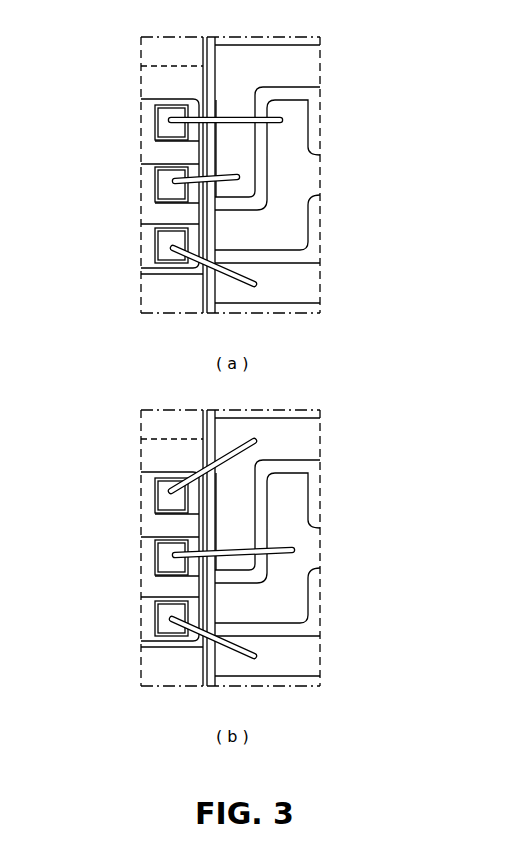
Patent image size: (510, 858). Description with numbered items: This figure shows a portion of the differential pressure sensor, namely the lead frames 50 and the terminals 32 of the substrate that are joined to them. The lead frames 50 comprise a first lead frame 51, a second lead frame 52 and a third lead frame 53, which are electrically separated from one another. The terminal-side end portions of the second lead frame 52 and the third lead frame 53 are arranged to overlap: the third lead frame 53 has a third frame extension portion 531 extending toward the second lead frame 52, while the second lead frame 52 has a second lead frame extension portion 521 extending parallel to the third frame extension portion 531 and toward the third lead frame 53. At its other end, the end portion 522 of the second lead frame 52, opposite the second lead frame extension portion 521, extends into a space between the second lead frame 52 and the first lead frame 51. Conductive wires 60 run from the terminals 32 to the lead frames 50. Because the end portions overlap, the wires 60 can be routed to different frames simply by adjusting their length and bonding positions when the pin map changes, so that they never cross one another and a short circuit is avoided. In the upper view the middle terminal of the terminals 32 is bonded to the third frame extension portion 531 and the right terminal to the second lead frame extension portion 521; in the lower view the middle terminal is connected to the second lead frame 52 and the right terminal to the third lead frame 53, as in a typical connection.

The lead frames 50 is at (249, 361).
The first lead frame 51 is at (306, 469).
The second lead frame 52 is at (225, 355).
The third lead frame 53 is at (225, 307).
The second lead frame extension portion 521 is at (186, 341).
The end portion 522 is at (186, 409).
The third frame extension portion 531 is at (145, 335).
The terminals 32 is at (120, 369).
The conductive wires 60 is at (172, 371).